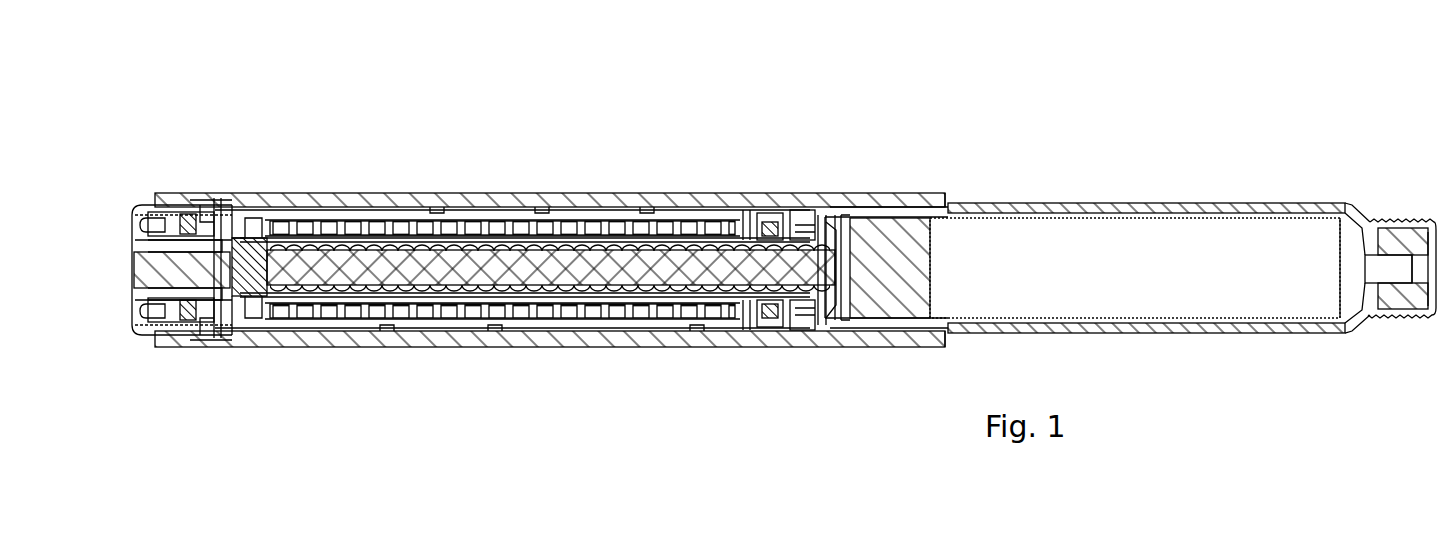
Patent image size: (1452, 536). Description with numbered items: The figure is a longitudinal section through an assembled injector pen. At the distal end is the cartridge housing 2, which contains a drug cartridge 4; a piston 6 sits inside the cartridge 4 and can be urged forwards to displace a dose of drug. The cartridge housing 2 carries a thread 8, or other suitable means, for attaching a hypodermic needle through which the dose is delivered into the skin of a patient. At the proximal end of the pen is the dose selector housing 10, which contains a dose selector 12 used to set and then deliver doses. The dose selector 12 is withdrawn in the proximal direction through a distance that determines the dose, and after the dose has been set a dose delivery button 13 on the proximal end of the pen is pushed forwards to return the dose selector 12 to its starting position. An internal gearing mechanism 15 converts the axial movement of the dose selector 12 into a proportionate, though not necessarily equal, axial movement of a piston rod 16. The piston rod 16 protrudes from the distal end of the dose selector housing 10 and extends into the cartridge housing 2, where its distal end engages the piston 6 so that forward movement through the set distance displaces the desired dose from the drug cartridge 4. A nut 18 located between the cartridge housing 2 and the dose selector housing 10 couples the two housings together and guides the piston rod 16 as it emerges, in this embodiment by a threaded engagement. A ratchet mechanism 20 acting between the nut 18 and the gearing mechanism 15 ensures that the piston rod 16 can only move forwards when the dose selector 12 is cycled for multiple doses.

The cartridge housing 2 is at (1033, 203).
The drug cartridge 4 is at (1180, 220).
The piston 6 is at (905, 243).
The thread 8 is at (1393, 228).
The dose selector housing 10 is at (473, 192).
The dose selector 12 is at (193, 190).
The dose delivery button 13 is at (130, 210).
The internal gearing mechanism 15 is at (417, 246).
The piston rod 16 is at (642, 262).
The nut 18 is at (802, 213).
The ratchet mechanism 20 is at (770, 226).